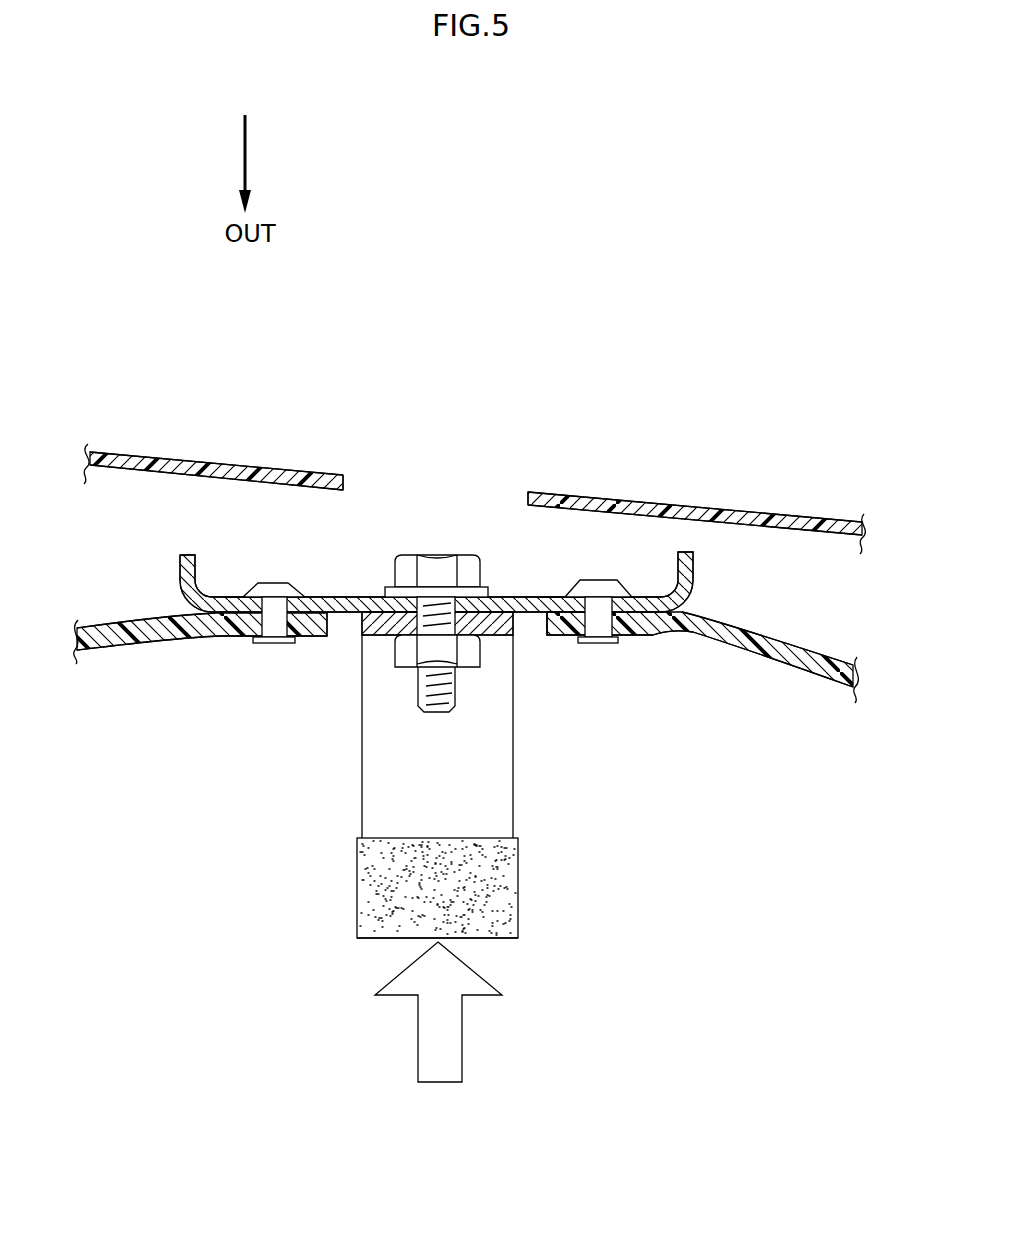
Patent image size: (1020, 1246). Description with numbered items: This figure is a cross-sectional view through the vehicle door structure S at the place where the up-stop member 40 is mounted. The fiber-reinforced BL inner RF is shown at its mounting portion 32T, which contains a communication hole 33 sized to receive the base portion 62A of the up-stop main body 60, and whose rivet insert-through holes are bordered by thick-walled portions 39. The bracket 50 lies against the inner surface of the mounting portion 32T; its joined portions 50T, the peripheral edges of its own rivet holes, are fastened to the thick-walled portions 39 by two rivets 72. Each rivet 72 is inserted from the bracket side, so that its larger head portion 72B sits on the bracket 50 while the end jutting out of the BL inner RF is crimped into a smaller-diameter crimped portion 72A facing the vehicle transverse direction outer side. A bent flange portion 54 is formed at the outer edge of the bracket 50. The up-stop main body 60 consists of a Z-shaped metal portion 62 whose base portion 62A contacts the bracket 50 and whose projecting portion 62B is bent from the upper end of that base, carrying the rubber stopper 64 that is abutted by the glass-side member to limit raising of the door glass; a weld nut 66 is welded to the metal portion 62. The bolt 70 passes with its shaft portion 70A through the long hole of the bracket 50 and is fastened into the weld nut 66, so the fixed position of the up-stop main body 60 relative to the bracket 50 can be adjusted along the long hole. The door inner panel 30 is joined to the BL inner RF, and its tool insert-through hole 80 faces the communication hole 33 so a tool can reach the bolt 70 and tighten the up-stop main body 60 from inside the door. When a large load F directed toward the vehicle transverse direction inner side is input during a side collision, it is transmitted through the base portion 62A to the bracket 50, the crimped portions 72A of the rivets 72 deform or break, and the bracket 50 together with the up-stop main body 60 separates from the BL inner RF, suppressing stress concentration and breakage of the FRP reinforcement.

The door inner panel 30 is at (772, 512).
The mounting portion of the BL inner RF 32T is at (765, 653).
The communication hole 33 is at (545, 617).
The thick-walled portion 39 is at (466, 678).
The up-stop member 40 is at (415, 805).
The bracket 50 is at (397, 563).
The joined portion 50T is at (240, 606).
The flange portion 54 is at (183, 567).
The up-stop main body 60 is at (457, 918).
The metal portion 62 is at (435, 736).
The base portion 62A is at (370, 622).
The projecting portion 62B is at (372, 800).
The rubber stopper 64 is at (378, 927).
The weld nut 66 is at (407, 660).
The bolt 70 is at (440, 614).
The shaft portion of the bolt 70A is at (457, 690).
The rivet 72 is at (454, 605).
The crimped portion 72A is at (273, 643).
The head portion 72B is at (290, 590).
The tool insert-through hole 80 is at (525, 497).
The vehicle door structure S is at (696, 401).
The load F is at (438, 1012).